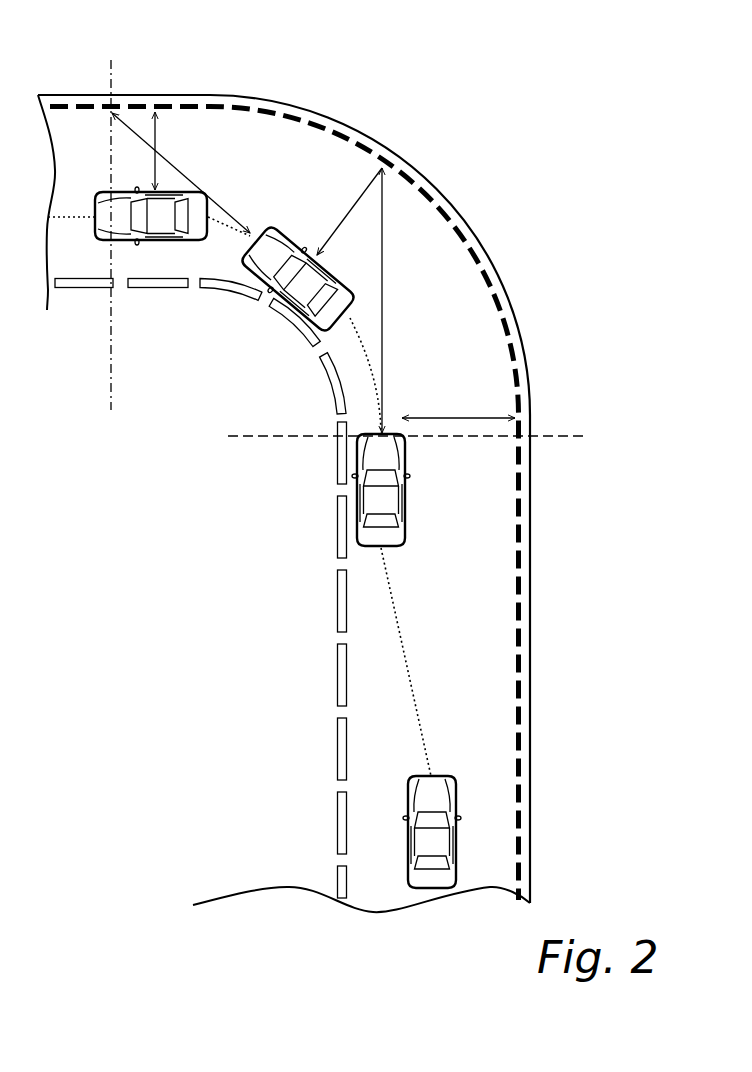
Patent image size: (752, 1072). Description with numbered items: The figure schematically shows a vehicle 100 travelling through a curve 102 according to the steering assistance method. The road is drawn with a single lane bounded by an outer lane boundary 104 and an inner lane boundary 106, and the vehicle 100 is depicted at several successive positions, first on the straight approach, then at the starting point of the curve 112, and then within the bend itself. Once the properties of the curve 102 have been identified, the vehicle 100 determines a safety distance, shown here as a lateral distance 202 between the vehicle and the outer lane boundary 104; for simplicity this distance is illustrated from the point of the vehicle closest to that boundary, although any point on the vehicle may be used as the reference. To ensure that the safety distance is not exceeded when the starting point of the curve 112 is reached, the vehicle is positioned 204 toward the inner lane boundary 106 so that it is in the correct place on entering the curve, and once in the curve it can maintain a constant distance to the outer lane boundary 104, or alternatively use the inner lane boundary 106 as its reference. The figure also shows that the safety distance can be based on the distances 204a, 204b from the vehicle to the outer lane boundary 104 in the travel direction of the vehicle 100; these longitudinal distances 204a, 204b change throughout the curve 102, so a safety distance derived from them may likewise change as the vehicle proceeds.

The vehicle 100 is at (457, 838).
The curve 102 is at (252, 363).
The outer lane boundary 104 is at (515, 328).
The inner lane boundary 106 is at (332, 380).
The starting point of the curve 112 is at (560, 436).
The lateral distance 202 is at (156, 132).
The positioning of the vehicle 204 is at (395, 623).
The longitudinal distance to the outer lane boundary 204a is at (386, 232).
The longitudinal distance to the outer lane boundary 204b is at (190, 183).